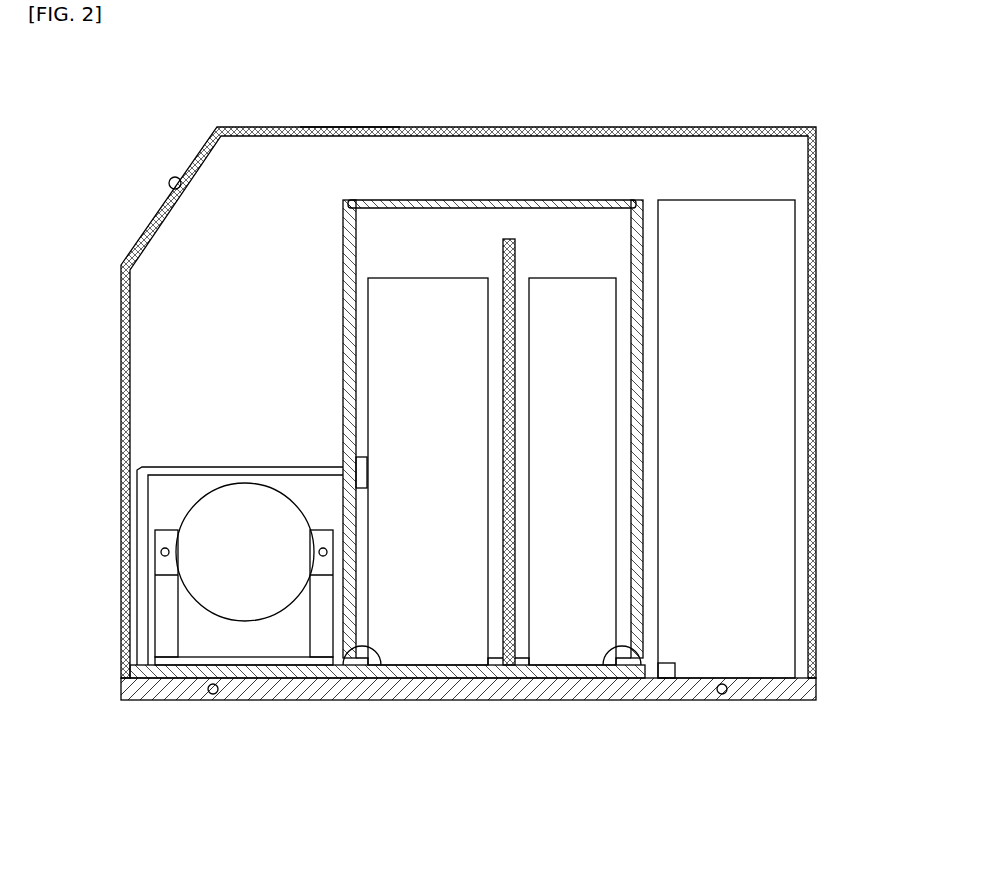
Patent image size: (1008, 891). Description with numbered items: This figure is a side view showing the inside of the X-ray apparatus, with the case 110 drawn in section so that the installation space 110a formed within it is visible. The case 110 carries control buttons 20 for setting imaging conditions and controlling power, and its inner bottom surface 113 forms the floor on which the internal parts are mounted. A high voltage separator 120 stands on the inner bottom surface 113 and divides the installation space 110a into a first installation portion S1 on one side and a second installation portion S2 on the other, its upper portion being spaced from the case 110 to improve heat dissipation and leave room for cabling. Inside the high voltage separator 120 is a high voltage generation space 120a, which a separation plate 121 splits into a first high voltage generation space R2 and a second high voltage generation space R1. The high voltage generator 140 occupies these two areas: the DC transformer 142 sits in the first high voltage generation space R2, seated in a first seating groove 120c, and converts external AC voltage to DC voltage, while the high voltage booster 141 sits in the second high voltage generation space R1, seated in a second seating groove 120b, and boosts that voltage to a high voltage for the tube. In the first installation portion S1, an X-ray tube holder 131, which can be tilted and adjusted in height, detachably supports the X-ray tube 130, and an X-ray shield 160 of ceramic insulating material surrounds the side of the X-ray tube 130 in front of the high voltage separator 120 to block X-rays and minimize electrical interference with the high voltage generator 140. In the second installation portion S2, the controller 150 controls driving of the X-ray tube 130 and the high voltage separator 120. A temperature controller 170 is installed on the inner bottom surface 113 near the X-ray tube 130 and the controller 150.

The control buttons 20 is at (170, 182).
The case 110 is at (817, 185).
The installation space 110a is at (298, 168).
The inner bottom surface 113 is at (805, 696).
The high voltage separator 120 is at (493, 416).
The high voltage generation space 120a is at (510, 221).
The second seating groove 120b is at (346, 655).
The first seating groove 120c is at (641, 640).
The separation plate 121 is at (510, 280).
The X-ray tube 130 is at (218, 590).
The X-ray tube holder 131 is at (165, 618).
The high voltage generator 140 is at (492, 543).
The high voltage booster 141 is at (438, 643).
The DC transformer 142 is at (572, 519).
The controller 150 is at (780, 477).
The X-ray shield 160 is at (140, 532).
The temperature controller 170 is at (675, 668).
The second high voltage generation space R1 is at (393, 249).
The first high voltage generation space R2 is at (617, 244).
The first installation portion S1 is at (162, 374).
The second installation portion S2 is at (802, 376).